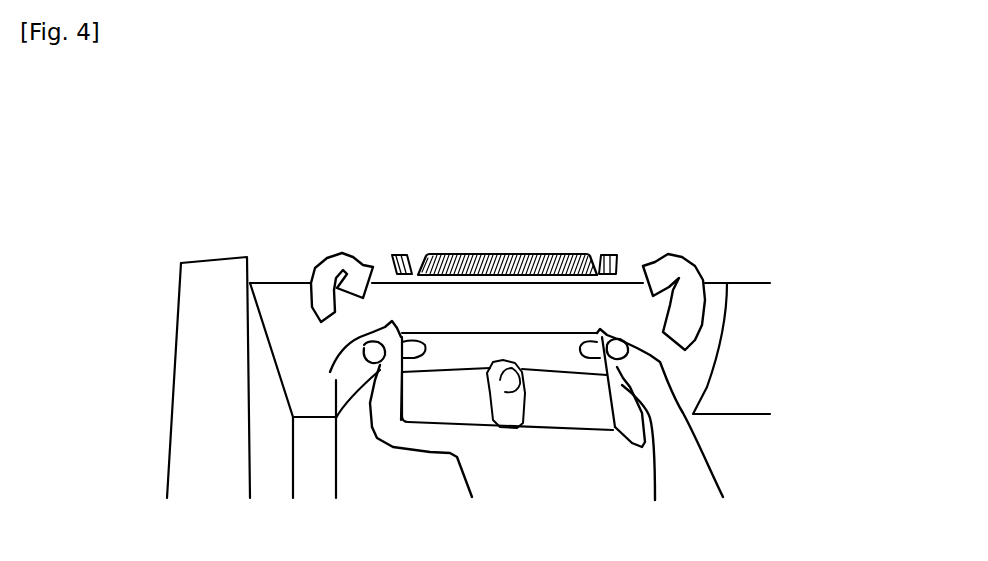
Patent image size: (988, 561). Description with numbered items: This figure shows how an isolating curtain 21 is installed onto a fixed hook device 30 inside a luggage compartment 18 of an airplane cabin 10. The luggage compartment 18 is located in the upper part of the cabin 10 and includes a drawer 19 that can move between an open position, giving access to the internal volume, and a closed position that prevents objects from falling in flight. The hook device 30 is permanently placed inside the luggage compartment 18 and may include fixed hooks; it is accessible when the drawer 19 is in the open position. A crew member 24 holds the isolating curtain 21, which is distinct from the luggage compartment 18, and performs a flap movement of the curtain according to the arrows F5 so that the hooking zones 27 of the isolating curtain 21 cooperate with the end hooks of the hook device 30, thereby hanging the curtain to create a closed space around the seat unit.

The airplane cabin 10 is at (154, 235).
The luggage compartment 18 is at (370, 243).
The drawer 19 is at (493, 297).
The isolating curtain 21 is at (377, 467).
The crew member 24 is at (547, 475).
The hooking zones 27 is at (362, 353).
The hook device 30 is at (453, 257).
The arrows F5 is at (325, 283).